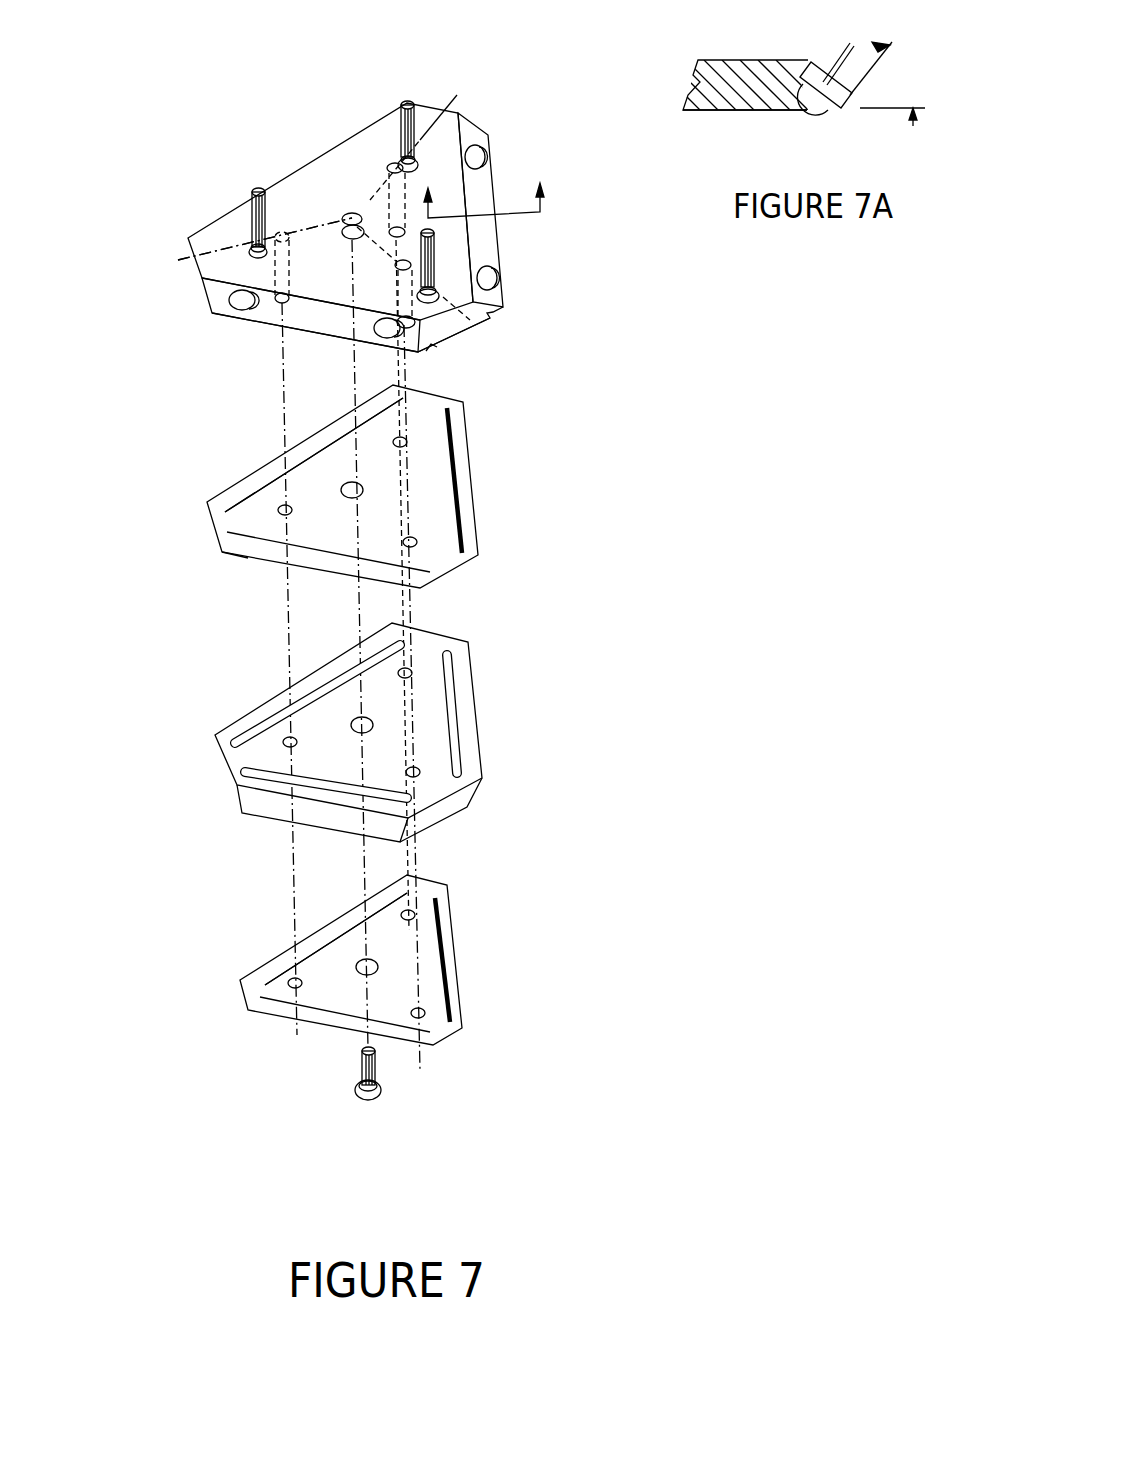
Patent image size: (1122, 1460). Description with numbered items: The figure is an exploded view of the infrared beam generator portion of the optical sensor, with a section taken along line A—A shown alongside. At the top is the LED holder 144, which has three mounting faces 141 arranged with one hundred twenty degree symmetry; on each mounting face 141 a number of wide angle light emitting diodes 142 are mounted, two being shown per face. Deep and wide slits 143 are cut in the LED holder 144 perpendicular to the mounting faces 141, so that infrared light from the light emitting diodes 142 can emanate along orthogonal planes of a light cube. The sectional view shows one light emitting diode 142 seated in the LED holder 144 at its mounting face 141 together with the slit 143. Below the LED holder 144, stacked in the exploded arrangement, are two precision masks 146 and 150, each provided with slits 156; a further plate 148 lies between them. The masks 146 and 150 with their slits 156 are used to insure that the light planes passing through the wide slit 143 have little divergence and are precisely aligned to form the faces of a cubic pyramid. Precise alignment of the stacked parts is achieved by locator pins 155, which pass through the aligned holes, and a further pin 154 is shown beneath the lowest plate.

In FIG. 7, the mounting face 141 is at (483, 245).
In FIG. 7A, the mounting face 141 is at (738, 55).
In FIG. 7, the wide angle light emitting diode 142 is at (497, 280).
In FIG. 7A, the wide angle light emitting diode 142 is at (827, 107).
In FIG. 7A, the slit 143 is at (812, 108).
In FIG. 7, the LED holder 144 is at (505, 312).
In FIG. 7A, the LED holder 144 is at (695, 77).
In FIG. 7, the precision mask 146 is at (478, 555).
In FIG. 7, the second slotted plate 148 is at (482, 778).
In FIG. 7, the precision mask 150 is at (453, 962).
In FIG. 7, the fastening pin 154 is at (380, 1073).
In FIG. 7, the locator pin 155 is at (222, 194).
In FIG. 7, the slit 156 is at (262, 975).